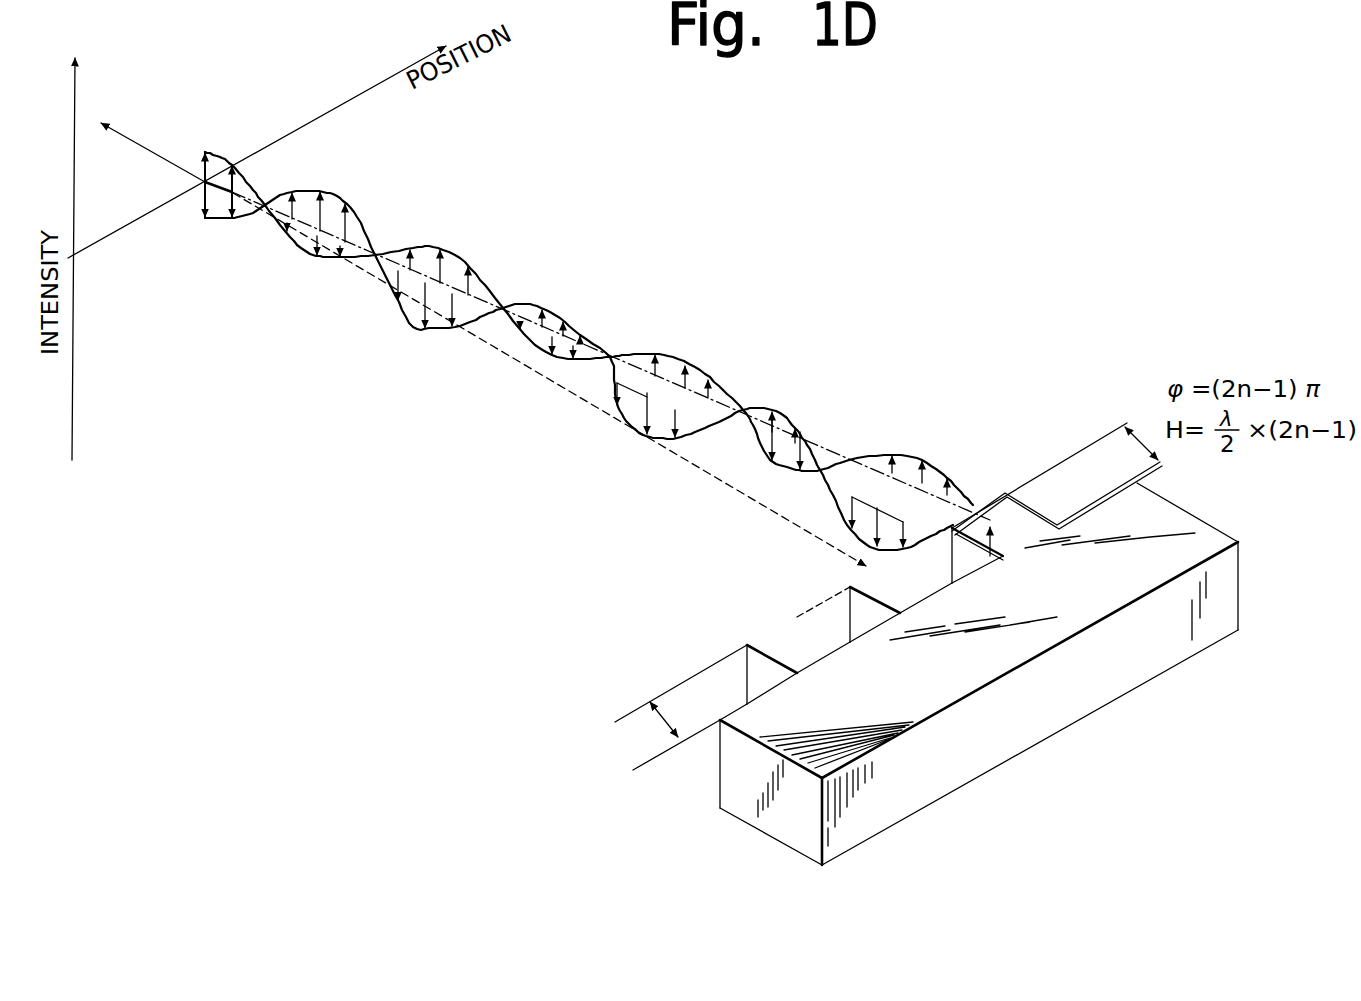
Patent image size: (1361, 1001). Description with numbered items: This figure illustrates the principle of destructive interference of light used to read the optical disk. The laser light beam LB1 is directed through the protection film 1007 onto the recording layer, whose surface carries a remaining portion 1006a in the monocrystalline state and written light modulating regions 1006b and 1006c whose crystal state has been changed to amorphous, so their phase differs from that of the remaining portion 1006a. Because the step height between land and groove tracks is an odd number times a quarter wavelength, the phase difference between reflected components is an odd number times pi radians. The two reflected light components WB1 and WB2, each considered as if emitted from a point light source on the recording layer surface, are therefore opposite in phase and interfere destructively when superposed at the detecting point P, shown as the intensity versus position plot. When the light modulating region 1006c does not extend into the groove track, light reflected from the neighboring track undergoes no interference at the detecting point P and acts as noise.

The detecting point P is at (205, 184).
The light component WB1 is at (937, 462).
The light component WB2 is at (823, 492).
The laser light beam LB1 is at (713, 478).
The remaining portion of recording layer 1006a is at (767, 632).
The light modulating region 1006b is at (852, 584).
The light modulating region 1006c is at (1005, 492).
The protection film 1007 is at (1203, 530).